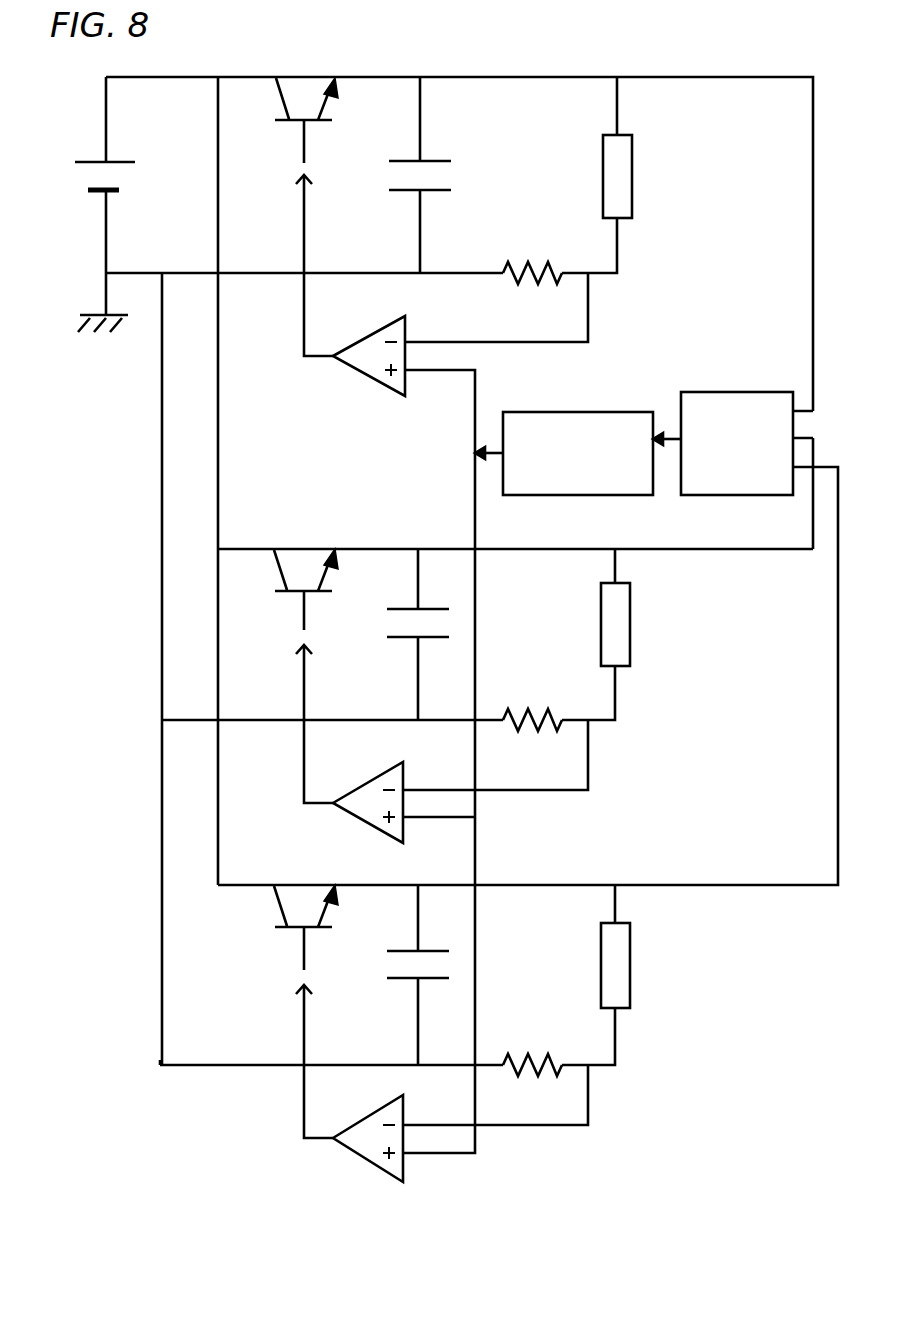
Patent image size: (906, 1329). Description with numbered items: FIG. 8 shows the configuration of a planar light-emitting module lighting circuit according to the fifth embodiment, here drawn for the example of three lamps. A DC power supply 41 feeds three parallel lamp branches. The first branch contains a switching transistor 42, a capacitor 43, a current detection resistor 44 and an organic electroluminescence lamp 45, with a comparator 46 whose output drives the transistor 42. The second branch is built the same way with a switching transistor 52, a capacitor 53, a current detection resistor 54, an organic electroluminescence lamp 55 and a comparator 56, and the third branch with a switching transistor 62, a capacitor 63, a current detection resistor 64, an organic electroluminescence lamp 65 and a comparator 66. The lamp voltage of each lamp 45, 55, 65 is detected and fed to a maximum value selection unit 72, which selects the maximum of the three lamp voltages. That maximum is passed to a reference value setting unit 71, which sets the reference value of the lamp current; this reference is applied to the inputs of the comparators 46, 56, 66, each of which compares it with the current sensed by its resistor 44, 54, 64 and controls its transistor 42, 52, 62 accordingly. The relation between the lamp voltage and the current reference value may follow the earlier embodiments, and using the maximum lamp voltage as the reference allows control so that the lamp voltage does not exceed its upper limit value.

The DC power supply 41 is at (75, 176).
The switching transistor 42 is at (277, 108).
The capacitor 43 is at (447, 175).
The current detection resistor 44 is at (533, 236).
The organic electroluminescence lamp 45 is at (632, 147).
The comparator 46 is at (372, 336).
The switching transistor 52 is at (302, 522).
The capacitor 53 is at (390, 623).
The current detection resistor 54 is at (530, 678).
The organic electroluminescence lamp 55 is at (655, 612).
The comparator 56 is at (362, 783).
The switching transistor 62 is at (302, 858).
The capacitor 63 is at (390, 965).
The current detection resistor 64 is at (530, 1020).
The organic electroluminescence lamp 65 is at (632, 938).
The comparator 66 is at (362, 1118).
The reference value setting unit 71 is at (583, 410).
The maximum value selection unit 72 is at (738, 392).